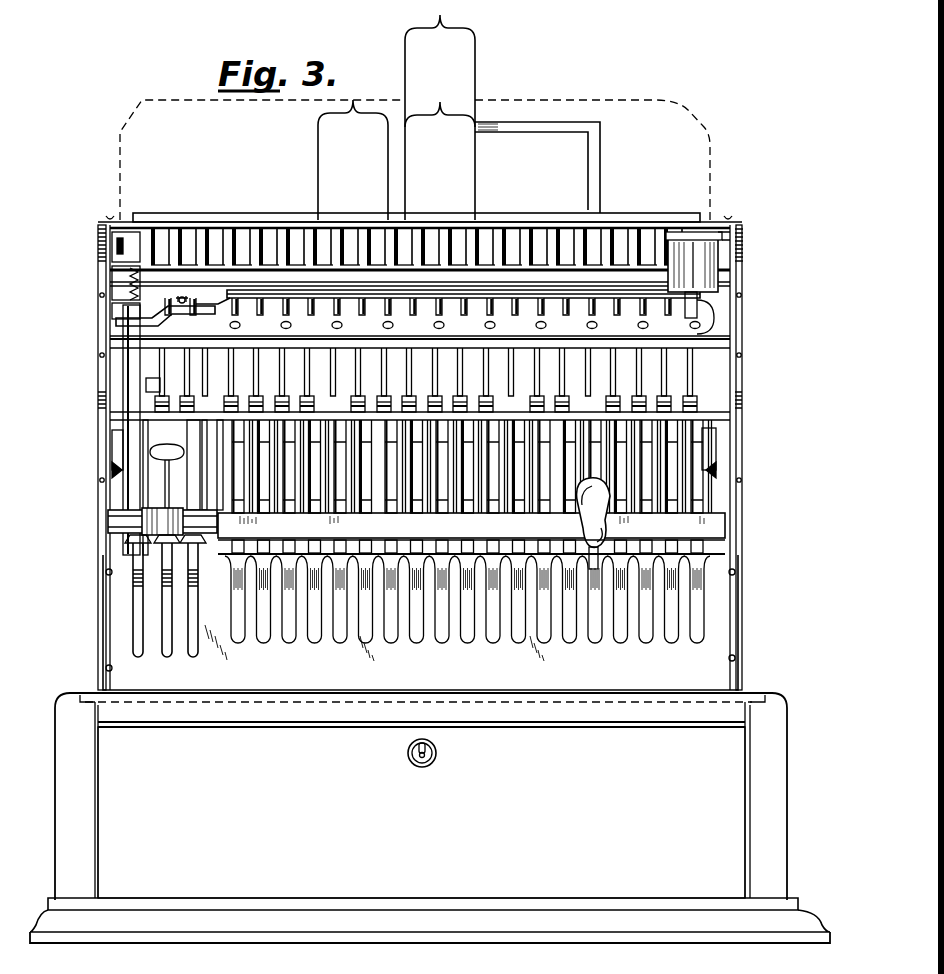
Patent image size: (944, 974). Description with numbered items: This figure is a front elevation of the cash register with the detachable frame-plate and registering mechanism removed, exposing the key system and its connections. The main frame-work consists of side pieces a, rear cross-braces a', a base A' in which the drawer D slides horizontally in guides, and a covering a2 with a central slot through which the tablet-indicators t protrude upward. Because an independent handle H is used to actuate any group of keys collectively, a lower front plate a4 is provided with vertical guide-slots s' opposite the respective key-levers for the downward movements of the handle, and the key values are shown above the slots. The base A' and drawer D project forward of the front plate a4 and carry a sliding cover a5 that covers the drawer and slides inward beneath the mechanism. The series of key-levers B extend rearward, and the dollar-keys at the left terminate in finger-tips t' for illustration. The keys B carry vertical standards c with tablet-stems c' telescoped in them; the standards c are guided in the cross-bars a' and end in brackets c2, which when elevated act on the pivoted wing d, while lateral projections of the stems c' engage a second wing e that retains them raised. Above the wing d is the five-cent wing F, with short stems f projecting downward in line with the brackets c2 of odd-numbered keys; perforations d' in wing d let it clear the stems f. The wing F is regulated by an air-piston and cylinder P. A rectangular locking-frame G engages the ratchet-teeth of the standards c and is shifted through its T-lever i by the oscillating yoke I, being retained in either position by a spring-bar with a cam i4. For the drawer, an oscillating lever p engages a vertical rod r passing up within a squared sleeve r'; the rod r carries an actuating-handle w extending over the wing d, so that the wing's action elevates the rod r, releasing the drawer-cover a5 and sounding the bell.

The side pieces a is at (417, 457).
The rear cross-braces a' is at (419, 307).
The covering a2 is at (700, 128).
The lower front plate a4 is at (754, 626).
The sliding cover a5 is at (540, 702).
The base A' is at (430, 818).
The key-levers B is at (612, 592).
The vertical standards c is at (472, 441).
The tablet-stems c' is at (425, 312).
The brackets c2 is at (355, 400).
The pivoted wing d is at (415, 328).
The perforations d' is at (418, 318).
The drawer D is at (421, 810).
The second wing e is at (220, 218).
The stems f is at (240, 326).
The five-cent wing F is at (224, 299).
The locking-frame G is at (700, 416).
The handle H is at (593, 523).
The T-lever i is at (112, 436).
The cam i4 is at (110, 468).
The yoke I is at (471, 525).
The oscillating lever p is at (108, 522).
The air-piston and cylinder P is at (720, 262).
The vertical rod r is at (153, 383).
The sleeve r' is at (110, 393).
The vertical guide-slots s' is at (467, 613).
The tablet-indicators t is at (393, 117).
The finger-tips t' is at (158, 550).
The actuating-handle w is at (158, 322).